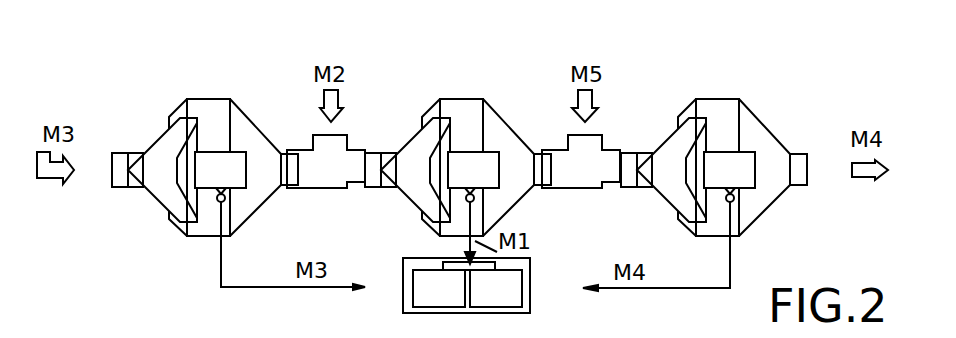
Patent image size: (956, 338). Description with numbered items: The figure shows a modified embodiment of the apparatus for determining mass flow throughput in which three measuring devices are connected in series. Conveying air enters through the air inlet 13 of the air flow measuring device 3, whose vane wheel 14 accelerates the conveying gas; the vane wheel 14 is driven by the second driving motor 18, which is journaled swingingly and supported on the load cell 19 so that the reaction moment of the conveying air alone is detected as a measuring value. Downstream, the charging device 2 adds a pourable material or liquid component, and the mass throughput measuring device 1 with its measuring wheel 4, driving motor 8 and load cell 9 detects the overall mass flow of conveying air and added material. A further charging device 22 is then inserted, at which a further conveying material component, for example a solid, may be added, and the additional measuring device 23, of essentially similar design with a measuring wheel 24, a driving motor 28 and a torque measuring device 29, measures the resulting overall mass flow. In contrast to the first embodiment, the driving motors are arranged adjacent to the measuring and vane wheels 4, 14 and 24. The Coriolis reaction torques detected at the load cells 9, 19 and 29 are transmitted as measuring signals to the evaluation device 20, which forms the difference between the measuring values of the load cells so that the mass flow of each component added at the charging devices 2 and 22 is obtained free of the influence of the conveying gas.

The mass throughput measuring device 1 is at (491, 105).
The charging device 2 is at (348, 134).
The air flow measuring device 3 is at (236, 107).
The measuring wheel 4 is at (405, 193).
The driving motor 8 is at (493, 150).
The load cell 9 is at (478, 198).
The air inlet 13 is at (114, 187).
The vane wheel 14 is at (152, 193).
The second driving motor 18 is at (243, 152).
The load cell 19 is at (228, 203).
The evaluation device 20 is at (403, 277).
The further charging device 22 is at (603, 133).
The additional measuring device 23 is at (751, 105).
The measuring wheel 24 is at (662, 195).
The driving motor 28 is at (752, 151).
The torque measuring device 29 is at (736, 202).